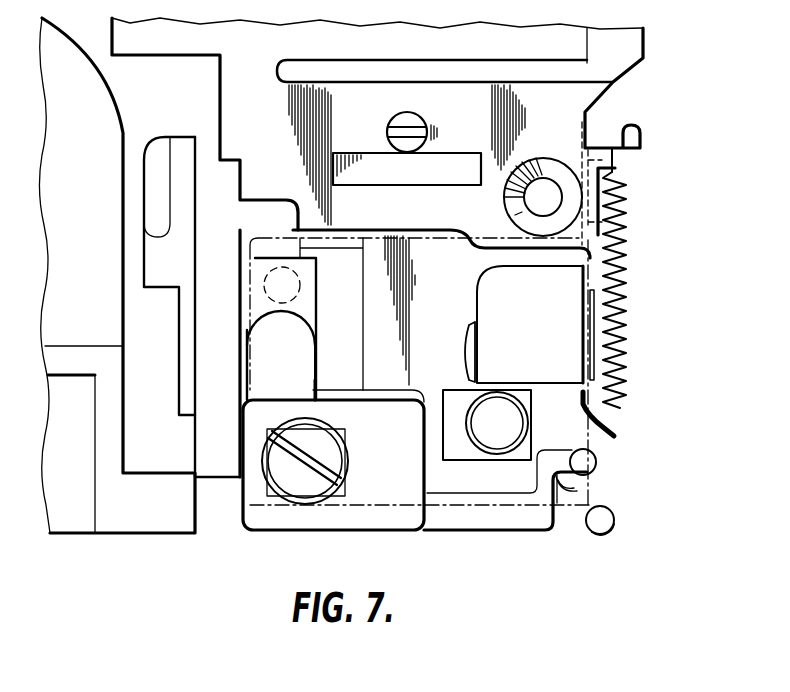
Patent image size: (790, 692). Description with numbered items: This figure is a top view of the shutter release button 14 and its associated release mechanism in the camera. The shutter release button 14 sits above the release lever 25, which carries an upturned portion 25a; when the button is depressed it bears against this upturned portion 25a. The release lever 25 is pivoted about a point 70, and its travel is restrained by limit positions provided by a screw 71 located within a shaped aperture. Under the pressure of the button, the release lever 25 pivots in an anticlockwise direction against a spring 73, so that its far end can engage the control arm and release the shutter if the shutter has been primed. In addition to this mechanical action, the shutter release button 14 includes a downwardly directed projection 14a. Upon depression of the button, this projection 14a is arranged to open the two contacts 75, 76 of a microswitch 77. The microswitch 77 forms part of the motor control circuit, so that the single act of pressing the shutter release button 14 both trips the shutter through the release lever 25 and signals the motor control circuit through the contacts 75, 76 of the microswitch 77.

The shutter release button 14 is at (488, 507).
The downwardly directed projection 14a is at (300, 287).
The release lever 25 is at (587, 283).
The upturned portion 25a is at (466, 358).
The pivot point 70 is at (607, 205).
The screw 71 is at (597, 363).
The spring 73 is at (620, 312).
The microswitch contact 75 is at (287, 367).
The microswitch contact 76 is at (302, 310).
The microswitch 77 is at (375, 523).